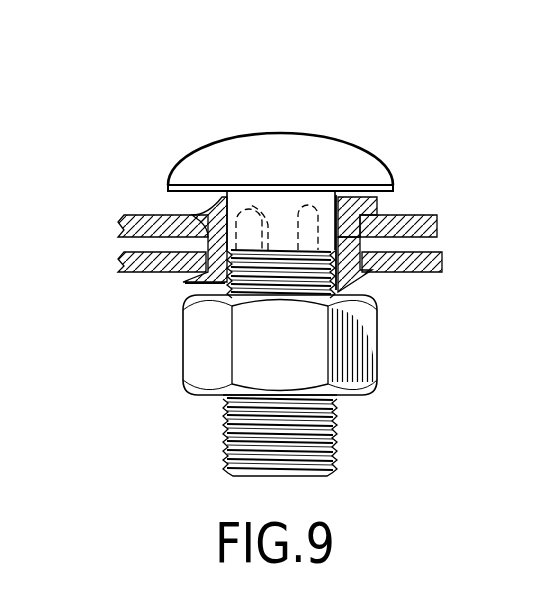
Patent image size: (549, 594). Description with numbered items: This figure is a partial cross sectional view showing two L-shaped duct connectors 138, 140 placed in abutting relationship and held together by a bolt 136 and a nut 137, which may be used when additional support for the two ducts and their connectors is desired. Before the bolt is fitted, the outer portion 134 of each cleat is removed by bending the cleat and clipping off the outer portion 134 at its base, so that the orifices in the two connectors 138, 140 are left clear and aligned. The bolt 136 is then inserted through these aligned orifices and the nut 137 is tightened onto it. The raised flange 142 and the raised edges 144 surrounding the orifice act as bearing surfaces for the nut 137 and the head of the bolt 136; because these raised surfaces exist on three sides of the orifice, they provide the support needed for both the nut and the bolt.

The outer portion 134 is at (289, 193).
The bolt 136 is at (331, 150).
The nut 137 is at (372, 358).
The connector 138 is at (133, 214).
The connector 140 is at (131, 270).
The raised flange 142 is at (185, 283).
The raised edges 144 is at (378, 205).